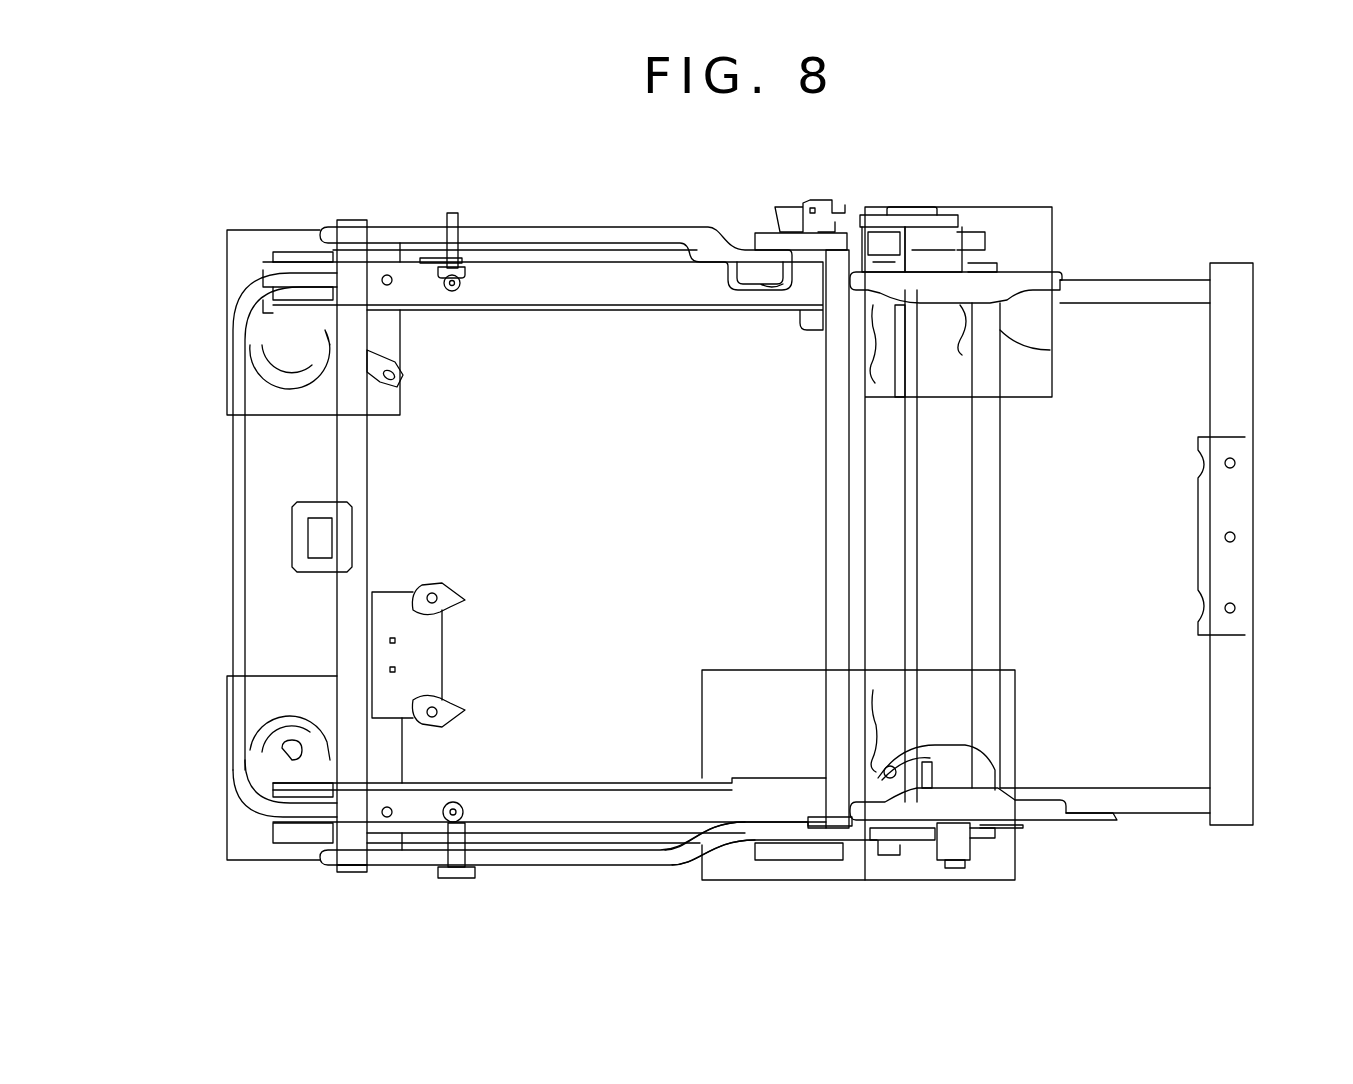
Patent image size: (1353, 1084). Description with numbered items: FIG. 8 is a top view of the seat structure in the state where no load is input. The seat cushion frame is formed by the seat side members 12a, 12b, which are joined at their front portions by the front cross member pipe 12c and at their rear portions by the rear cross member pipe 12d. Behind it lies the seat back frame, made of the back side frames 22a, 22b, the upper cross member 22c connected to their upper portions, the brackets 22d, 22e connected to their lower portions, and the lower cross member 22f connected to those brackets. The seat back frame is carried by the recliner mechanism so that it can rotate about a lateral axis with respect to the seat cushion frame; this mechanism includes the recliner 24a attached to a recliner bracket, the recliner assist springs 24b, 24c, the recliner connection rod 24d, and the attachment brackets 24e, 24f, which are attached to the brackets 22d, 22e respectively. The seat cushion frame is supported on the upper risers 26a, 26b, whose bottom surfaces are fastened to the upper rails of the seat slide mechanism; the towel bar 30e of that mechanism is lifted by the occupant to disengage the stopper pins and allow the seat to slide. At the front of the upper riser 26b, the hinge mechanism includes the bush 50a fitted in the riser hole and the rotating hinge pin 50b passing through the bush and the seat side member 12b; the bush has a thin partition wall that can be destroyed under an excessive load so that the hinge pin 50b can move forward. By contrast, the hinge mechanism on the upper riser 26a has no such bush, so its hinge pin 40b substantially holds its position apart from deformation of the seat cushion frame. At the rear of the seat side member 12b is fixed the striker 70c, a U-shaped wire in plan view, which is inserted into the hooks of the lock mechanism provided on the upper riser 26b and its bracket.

The seat side member 12a is at (578, 860).
The seat side member 12b is at (565, 232).
The front cross member pipe 12c is at (363, 447).
The rear cross member pipe 12d is at (830, 494).
The back side frame 22a is at (1190, 825).
The back side frame 22b is at (1153, 287).
The upper cross member 22c is at (1215, 362).
The bracket 22d is at (1045, 828).
The bracket 22e is at (1042, 273).
The lower cross member 22f is at (1000, 480).
The recliner 24a is at (895, 258).
The recliner assist spring 24b is at (883, 838).
The recliner assist spring 24c is at (905, 218).
The recliner connection rod 24d is at (918, 597).
The attachment bracket 24e is at (955, 860).
The attachment bracket 24f is at (932, 257).
The upper riser 26a is at (653, 836).
The upper riser 26b is at (635, 255).
The towel bar 30e is at (237, 578).
The hinge pin 40b is at (460, 878).
The bush 50a is at (432, 250).
The rotating hinge pin 50b is at (461, 287).
The striker 70c is at (750, 284).